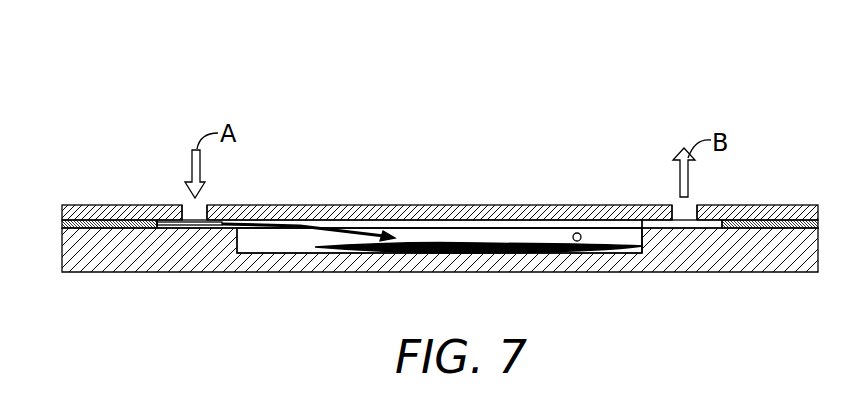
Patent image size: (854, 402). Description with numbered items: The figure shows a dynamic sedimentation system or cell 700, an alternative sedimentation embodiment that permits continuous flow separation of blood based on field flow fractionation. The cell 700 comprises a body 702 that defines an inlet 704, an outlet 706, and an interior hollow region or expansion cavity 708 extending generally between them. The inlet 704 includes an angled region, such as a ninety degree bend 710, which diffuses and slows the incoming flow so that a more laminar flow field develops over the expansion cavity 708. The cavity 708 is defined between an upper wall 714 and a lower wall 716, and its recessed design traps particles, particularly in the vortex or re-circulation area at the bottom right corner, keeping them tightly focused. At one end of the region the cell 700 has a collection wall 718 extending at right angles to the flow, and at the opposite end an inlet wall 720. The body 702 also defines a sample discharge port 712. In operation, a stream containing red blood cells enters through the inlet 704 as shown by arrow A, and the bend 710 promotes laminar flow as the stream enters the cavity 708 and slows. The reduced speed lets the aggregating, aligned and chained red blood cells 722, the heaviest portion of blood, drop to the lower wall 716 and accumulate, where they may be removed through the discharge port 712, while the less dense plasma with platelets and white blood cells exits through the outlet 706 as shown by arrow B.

The dynamic sedimentation cell 700 is at (237, 76).
The body 702 is at (63, 189).
The inlet 704 is at (206, 205).
The outlet 706 is at (697, 205).
The expansion cavity 708 is at (285, 244).
The bend 710 is at (192, 228).
The sample discharge port 712 is at (577, 233).
The upper wall 714 is at (486, 222).
The lower wall 716 is at (309, 237).
The collection wall 718 is at (641, 242).
The inlet wall 720 is at (240, 241).
The red blood cells 722 is at (447, 245).